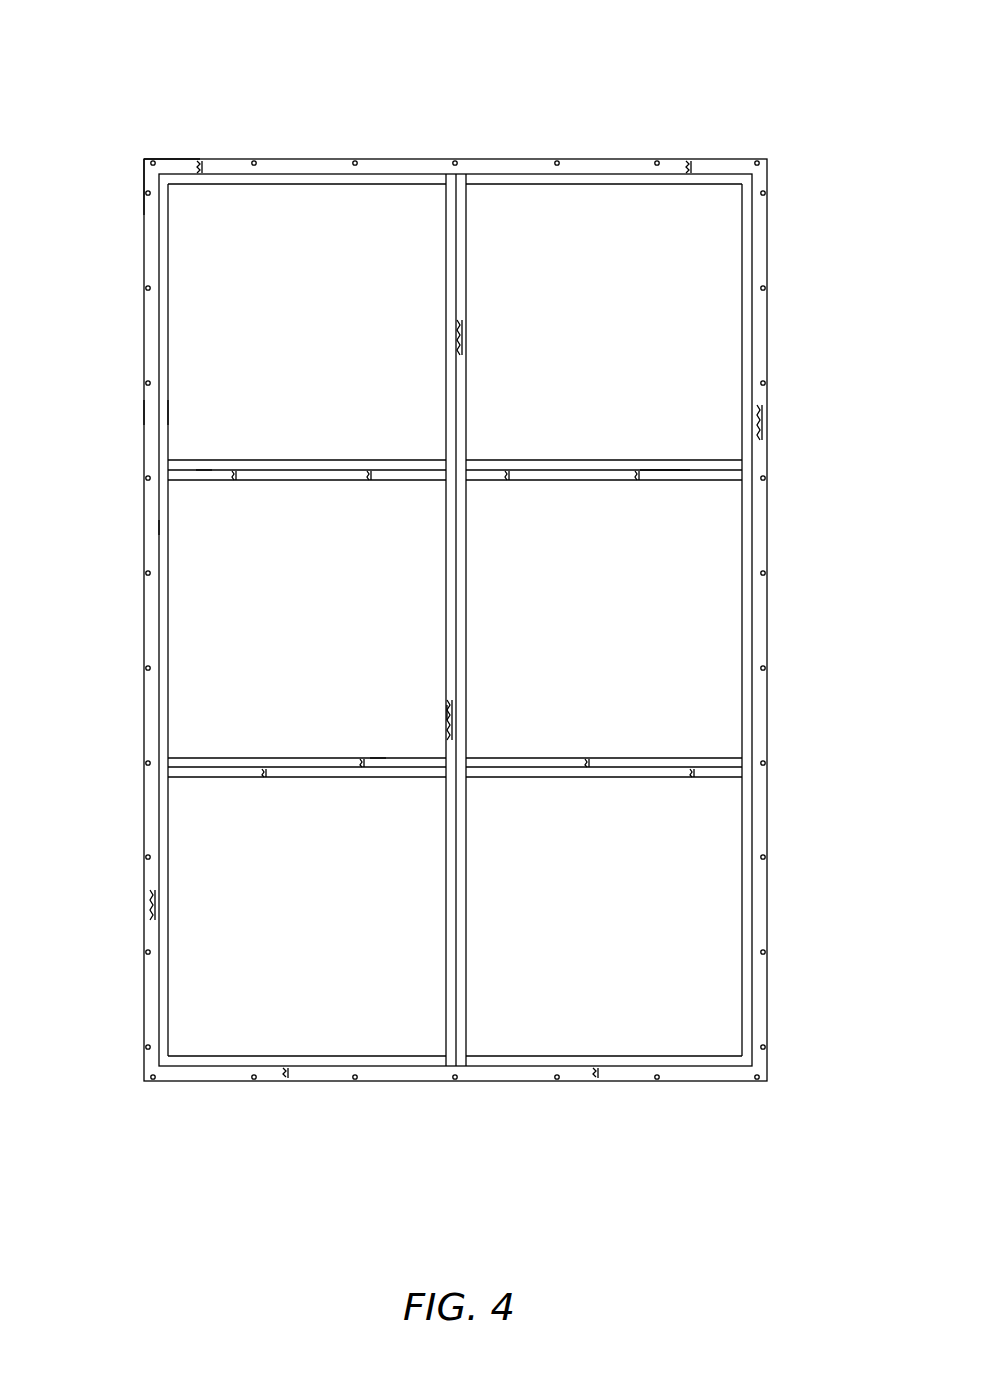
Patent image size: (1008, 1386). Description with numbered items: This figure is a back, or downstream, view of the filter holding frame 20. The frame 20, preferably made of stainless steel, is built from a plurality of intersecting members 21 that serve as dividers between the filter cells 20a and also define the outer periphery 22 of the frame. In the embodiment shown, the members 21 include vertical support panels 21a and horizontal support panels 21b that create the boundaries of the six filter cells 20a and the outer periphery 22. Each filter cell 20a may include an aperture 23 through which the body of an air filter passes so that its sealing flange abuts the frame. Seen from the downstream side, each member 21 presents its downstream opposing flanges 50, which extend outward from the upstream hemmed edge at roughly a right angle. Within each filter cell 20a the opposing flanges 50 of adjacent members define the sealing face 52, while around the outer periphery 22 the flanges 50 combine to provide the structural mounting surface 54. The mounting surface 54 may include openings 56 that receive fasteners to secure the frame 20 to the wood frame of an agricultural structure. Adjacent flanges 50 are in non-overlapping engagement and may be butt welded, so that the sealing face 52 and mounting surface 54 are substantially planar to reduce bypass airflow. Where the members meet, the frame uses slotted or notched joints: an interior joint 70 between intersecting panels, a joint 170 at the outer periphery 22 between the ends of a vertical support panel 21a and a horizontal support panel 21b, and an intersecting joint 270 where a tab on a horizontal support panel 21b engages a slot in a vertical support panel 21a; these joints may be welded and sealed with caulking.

The filter holding frame 20 is at (148, 88).
The filter cell 20a is at (205, 683).
The intersecting member 21 is at (722, 218).
The vertical support panel 21a is at (758, 240).
The horizontal support panel 21b is at (632, 168).
The outer periphery 22 is at (541, 126).
The aperture 23 is at (170, 628).
The downstream opposing flange 50 is at (145, 413).
The sealing face 52 is at (203, 477).
The mounting surface 54 is at (177, 168).
The opening 56 is at (766, 855).
The joint 70 is at (408, 437).
The joint 170 is at (195, 1027).
The intersecting joint 270 is at (417, 214).